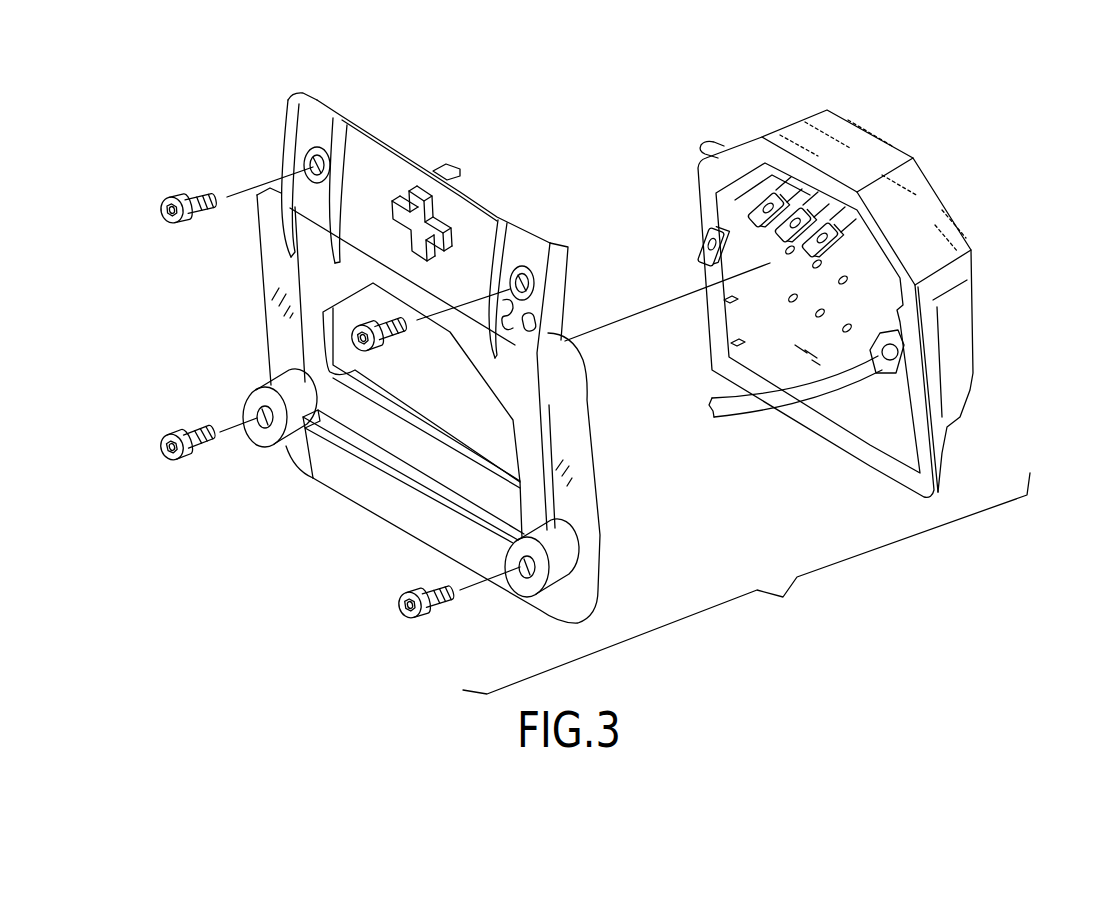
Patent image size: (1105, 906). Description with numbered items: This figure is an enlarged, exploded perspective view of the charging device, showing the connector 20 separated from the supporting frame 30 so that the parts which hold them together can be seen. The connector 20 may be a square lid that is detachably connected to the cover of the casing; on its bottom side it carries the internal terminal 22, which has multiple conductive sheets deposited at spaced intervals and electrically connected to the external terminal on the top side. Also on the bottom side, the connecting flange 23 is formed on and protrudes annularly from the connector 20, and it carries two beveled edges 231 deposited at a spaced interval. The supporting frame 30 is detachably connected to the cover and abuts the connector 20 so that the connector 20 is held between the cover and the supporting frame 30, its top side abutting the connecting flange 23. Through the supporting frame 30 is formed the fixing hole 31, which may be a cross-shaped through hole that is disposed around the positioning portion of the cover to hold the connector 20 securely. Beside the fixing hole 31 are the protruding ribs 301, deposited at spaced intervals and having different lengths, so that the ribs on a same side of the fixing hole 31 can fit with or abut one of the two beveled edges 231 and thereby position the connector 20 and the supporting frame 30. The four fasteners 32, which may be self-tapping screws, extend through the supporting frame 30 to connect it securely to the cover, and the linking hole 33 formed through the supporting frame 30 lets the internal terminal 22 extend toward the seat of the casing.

The connector 20 is at (994, 355).
The internal terminal 22 is at (807, 253).
The connecting flange 23 is at (917, 450).
The beveled edges 231 is at (713, 147).
The supporting frame 30 is at (231, 151).
The protruding ribs 301 is at (317, 97).
The fixing hole 31 is at (421, 212).
The fasteners 32 is at (170, 437).
The linking hole 33 is at (352, 366).